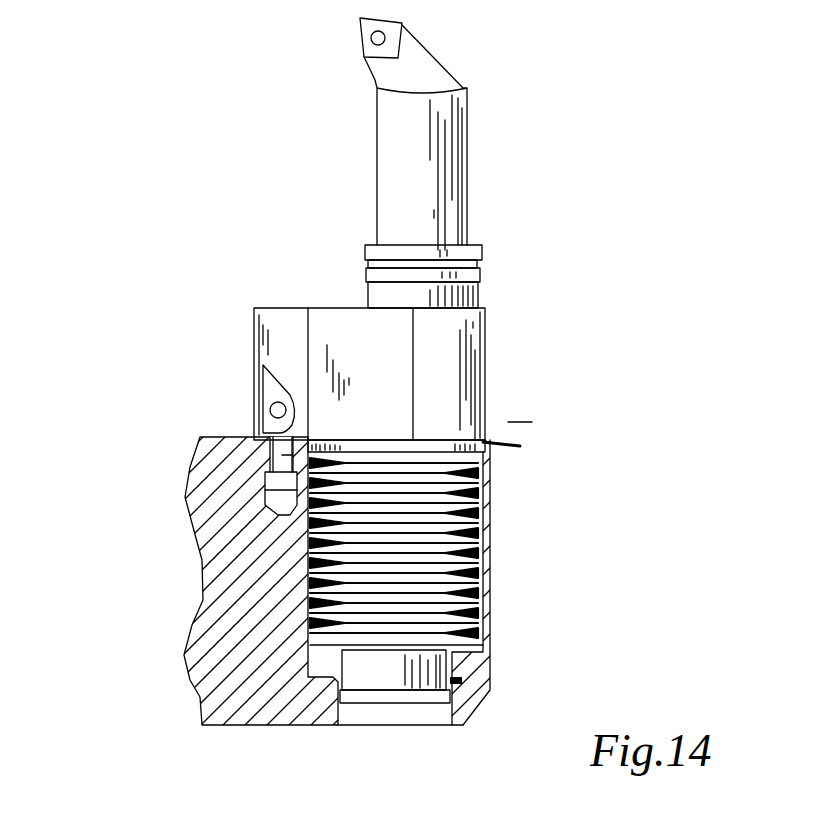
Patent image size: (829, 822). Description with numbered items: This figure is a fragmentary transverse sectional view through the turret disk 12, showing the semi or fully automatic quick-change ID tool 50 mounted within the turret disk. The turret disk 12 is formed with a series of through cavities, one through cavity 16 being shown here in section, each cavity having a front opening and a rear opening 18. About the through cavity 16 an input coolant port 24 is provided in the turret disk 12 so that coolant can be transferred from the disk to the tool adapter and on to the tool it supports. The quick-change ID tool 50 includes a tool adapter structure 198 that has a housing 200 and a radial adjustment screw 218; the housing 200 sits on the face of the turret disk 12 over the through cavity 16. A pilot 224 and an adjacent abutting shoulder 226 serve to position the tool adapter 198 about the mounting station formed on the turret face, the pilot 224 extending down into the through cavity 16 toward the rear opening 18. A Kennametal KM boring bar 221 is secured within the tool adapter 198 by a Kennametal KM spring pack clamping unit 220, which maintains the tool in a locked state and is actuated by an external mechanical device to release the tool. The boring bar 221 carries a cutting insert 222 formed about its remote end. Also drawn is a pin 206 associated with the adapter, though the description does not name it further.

The turret disk 12 is at (262, 615).
The through cavity 16 is at (462, 666).
The rear opening 18 is at (453, 678).
The input coolant port 24 is at (257, 492).
The semi or fully automatic quick-change ID tool 50 is at (605, 398).
The tool adapter structure 198 is at (536, 423).
The housing 200 is at (442, 370).
The locking pin 206 is at (277, 453).
The radial adjustment screw 218 is at (270, 410).
The spring pack clamping unit 220 is at (520, 588).
The boring bar 221 is at (447, 190).
The cutting insert 222 is at (395, 15).
The pilot 224 is at (487, 456).
The abutting shoulder 226 is at (512, 445).